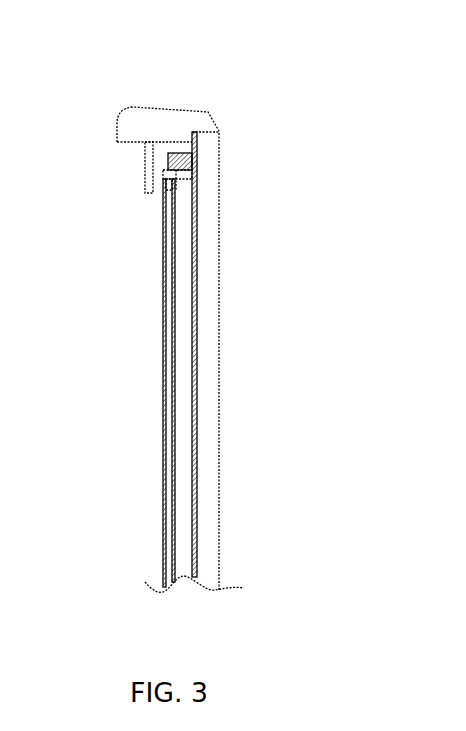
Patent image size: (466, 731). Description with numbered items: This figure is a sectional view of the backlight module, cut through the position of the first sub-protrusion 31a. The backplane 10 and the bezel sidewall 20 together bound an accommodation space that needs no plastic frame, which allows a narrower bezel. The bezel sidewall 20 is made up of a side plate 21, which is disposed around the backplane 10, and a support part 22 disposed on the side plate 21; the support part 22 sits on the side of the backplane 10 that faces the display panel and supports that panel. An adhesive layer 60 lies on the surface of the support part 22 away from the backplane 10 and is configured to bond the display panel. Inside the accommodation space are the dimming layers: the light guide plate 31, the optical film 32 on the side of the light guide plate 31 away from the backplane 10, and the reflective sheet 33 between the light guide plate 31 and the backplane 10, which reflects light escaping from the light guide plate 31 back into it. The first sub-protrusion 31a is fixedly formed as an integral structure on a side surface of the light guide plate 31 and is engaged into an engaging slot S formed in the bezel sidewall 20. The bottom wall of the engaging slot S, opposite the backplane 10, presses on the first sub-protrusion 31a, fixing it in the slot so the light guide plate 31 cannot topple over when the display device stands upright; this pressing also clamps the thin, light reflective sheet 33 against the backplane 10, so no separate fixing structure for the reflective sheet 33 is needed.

The backplane 10 is at (205, 470).
The bezel sidewall 20 is at (199, 302).
The side plate 21 is at (220, 131).
The support part 22 is at (165, 152).
The light guide plate 31 is at (186, 207).
The first sub-protrusion 31a is at (179, 190).
The optical film 32 is at (173, 415).
The reflective sheet 33 is at (197, 343).
The adhesive layer 60 is at (143, 162).
The engaging slot S is at (176, 167).